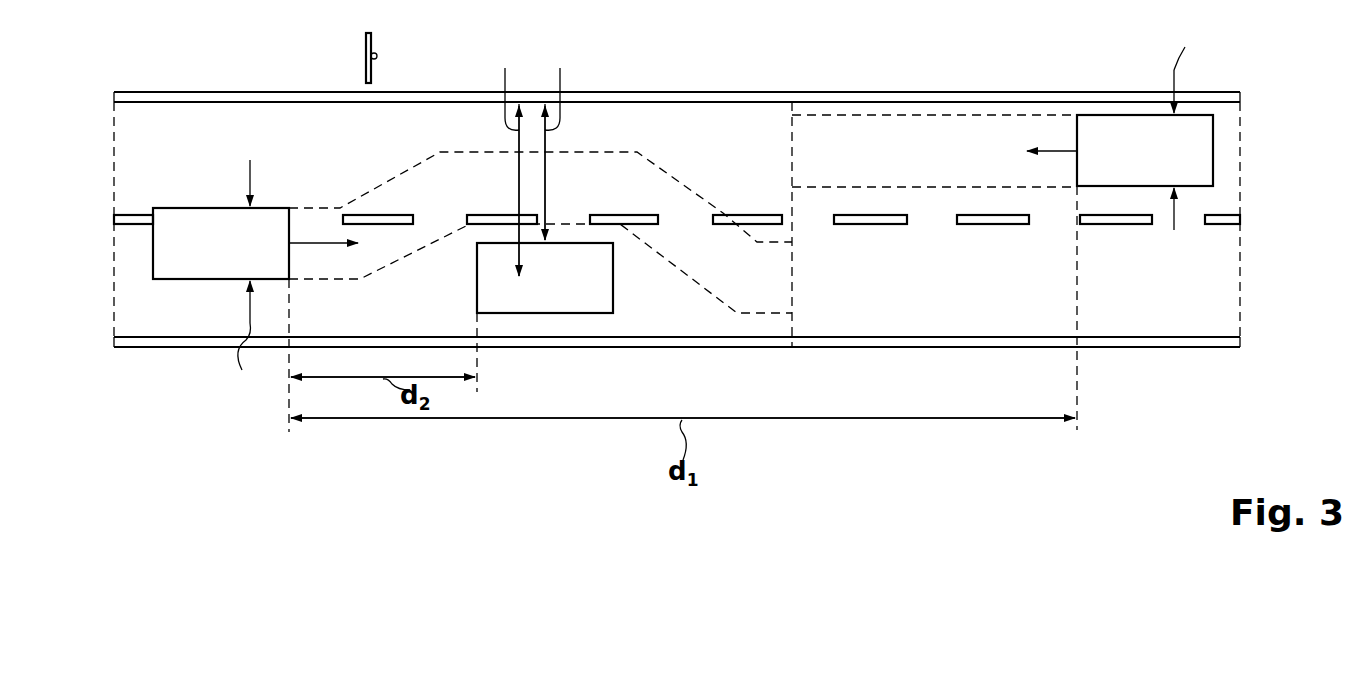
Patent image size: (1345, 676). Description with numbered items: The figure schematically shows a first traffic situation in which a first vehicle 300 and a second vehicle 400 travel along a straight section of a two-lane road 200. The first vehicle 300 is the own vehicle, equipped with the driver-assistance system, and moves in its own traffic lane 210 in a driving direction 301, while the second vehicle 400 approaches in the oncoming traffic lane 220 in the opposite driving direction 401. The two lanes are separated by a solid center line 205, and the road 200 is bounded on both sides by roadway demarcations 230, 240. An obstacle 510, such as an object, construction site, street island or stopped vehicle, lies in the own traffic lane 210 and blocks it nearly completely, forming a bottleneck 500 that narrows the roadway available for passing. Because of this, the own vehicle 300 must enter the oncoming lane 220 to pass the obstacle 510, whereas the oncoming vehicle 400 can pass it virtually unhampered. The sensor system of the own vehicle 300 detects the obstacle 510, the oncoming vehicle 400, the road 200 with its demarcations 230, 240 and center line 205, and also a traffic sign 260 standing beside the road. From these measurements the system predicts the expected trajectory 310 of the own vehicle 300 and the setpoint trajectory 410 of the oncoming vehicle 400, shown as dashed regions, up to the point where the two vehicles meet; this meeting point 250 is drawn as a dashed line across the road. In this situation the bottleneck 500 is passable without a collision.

The two-lane road 200 is at (1145, 313).
The center line 205 is at (1224, 220).
The traffic lane of first vehicle 210 is at (1228, 286).
The oncoming traffic lane 220 is at (1233, 155).
The roadway demarcation 230 is at (1232, 348).
The roadway demarcation 240 is at (1233, 98).
The meeting point 250 is at (792, 90).
The traffic sign 260 is at (366, 38).
The first vehicle 300 is at (198, 222).
The driving direction of first vehicle 301 is at (312, 237).
The expected trajectory of own vehicle 310 is at (620, 152).
The second vehicle 400 is at (1120, 127).
The driving direction of oncoming vehicle 401 is at (1030, 149).
The setpoint trajectory of oncoming vehicle 410 is at (890, 115).
The bottleneck 500 is at (488, 188).
The obstacle 510 is at (565, 293).